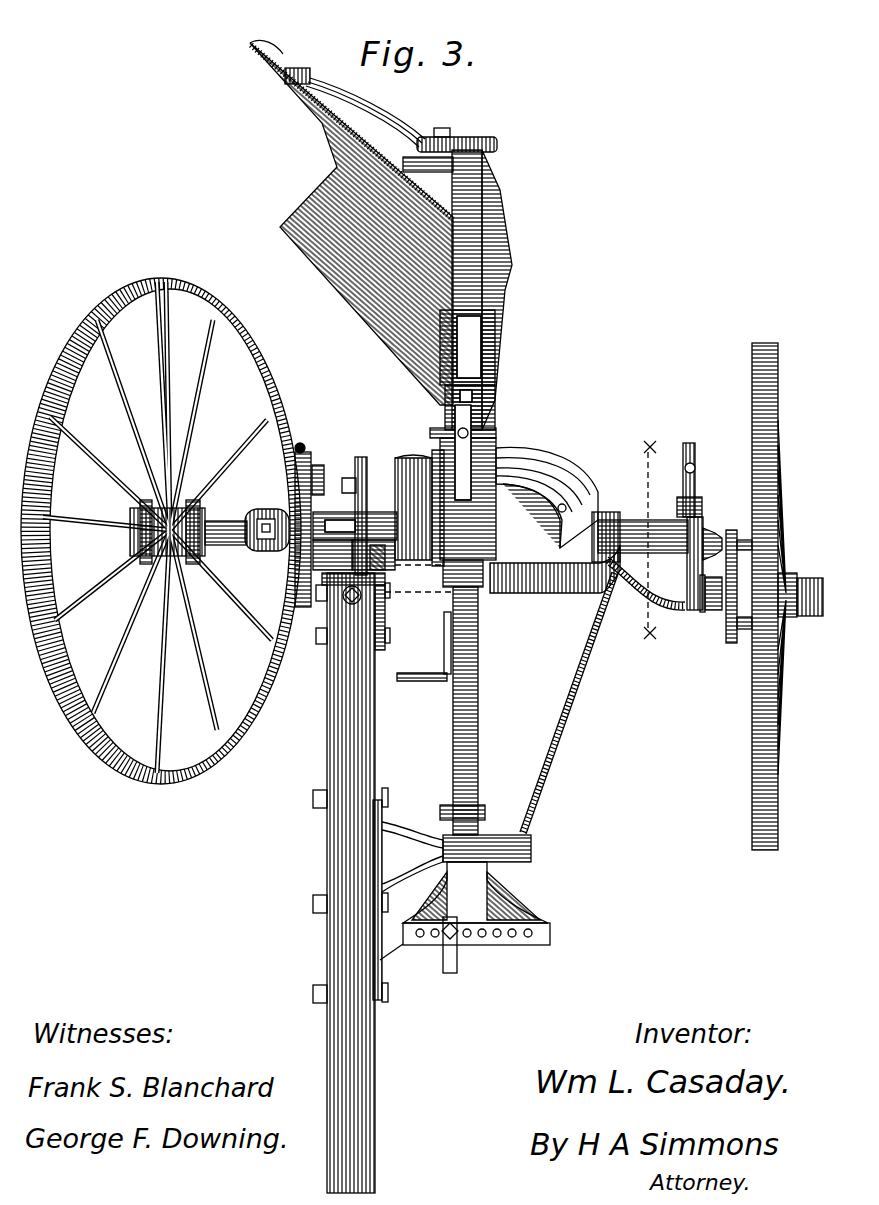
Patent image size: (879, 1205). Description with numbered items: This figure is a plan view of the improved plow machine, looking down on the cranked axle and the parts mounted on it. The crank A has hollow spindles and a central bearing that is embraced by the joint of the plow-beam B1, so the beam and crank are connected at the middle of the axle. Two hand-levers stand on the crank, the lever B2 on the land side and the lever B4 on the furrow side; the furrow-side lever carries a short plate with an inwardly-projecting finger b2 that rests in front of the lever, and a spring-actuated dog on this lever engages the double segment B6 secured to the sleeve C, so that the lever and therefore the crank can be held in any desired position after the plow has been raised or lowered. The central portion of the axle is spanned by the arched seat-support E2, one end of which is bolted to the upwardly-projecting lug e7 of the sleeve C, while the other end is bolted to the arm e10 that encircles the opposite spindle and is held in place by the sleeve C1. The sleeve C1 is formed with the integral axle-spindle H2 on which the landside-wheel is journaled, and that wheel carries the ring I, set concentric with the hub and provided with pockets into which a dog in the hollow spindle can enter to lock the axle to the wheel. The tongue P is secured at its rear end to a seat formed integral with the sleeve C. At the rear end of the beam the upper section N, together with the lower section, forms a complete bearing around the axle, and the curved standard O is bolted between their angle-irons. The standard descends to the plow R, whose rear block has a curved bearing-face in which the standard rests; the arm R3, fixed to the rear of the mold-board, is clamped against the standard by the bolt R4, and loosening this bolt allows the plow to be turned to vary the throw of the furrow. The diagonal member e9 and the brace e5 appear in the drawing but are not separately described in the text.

The plow R is at (381, 235).
The arm R3 is at (365, 112).
The bolt R4 is at (450, 143).
The curved standard O is at (482, 242).
The upper section of the rear end of the beam N is at (497, 352).
The crank A is at (514, 482).
The arm e10 is at (558, 489).
The hand-lever B4 is at (302, 452).
The double segment B6 is at (318, 476).
The sleeve C is at (355, 516).
The drum e9 is at (378, 548).
The upwardly-projecting lug e7 is at (376, 569).
The inwardly-projecting finger b2 is at (275, 552).
The plow-beam B1 is at (485, 711).
The arched seat-support E2 is at (552, 594).
The sleeve C1 is at (640, 554).
The hand-lever B2 is at (695, 478).
The axle-spindle H2 is at (700, 612).
The ring I is at (731, 537).
The diagonal brace e5 is at (569, 703).
The tongue P is at (377, 883).